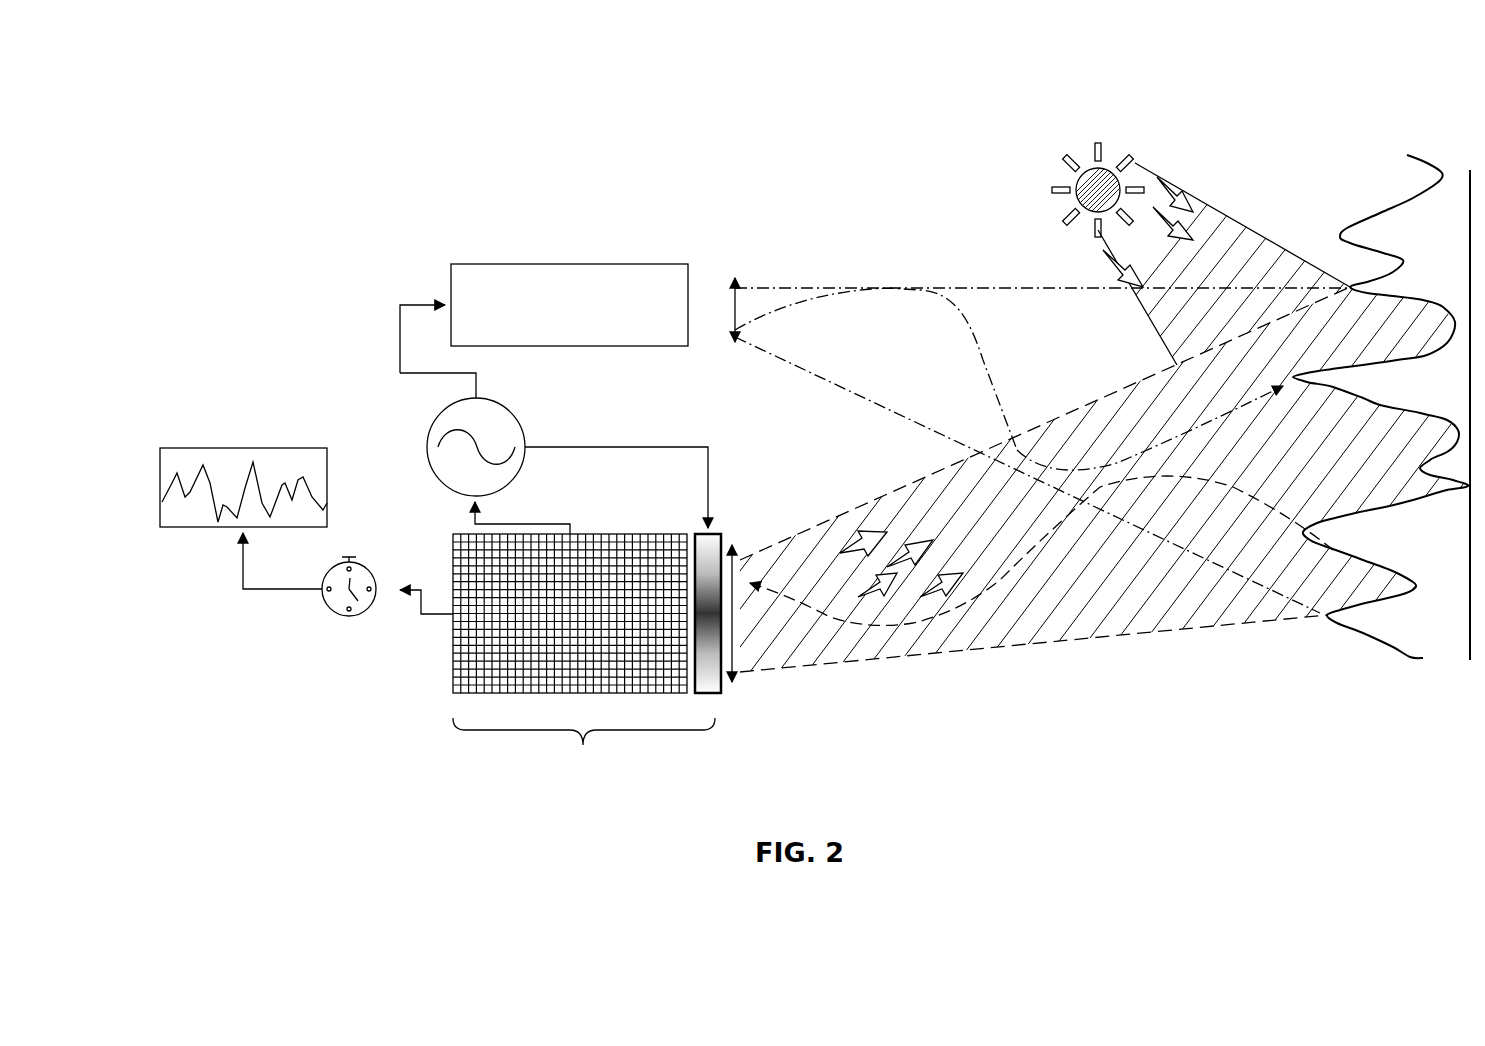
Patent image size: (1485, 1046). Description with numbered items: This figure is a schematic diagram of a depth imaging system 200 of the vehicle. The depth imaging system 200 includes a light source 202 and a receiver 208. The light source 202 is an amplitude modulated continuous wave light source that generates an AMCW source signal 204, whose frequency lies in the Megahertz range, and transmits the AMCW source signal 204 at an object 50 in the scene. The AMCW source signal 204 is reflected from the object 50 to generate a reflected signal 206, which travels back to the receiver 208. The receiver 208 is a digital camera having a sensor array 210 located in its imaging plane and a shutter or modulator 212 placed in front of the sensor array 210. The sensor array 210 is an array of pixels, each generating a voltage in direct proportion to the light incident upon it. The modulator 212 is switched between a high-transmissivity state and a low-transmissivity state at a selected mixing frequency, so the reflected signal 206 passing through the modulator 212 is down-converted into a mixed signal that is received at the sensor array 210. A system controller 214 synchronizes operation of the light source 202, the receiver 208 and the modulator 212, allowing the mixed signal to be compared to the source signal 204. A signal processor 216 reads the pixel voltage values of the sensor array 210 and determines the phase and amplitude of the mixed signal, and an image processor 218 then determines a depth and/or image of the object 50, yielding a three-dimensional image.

The depth imaging system 200 is at (176, 94).
The light source 202 is at (558, 264).
The AMCW source signal 204 is at (982, 357).
The reflected signal 206 is at (940, 622).
The receiver 208 is at (584, 750).
The sensor array 210 is at (453, 695).
The modulator 212 is at (712, 695).
The system controller 214 is at (430, 447).
The signal processor 216 is at (363, 566).
The image processor 218 is at (160, 490).
The object 50 is at (1402, 195).